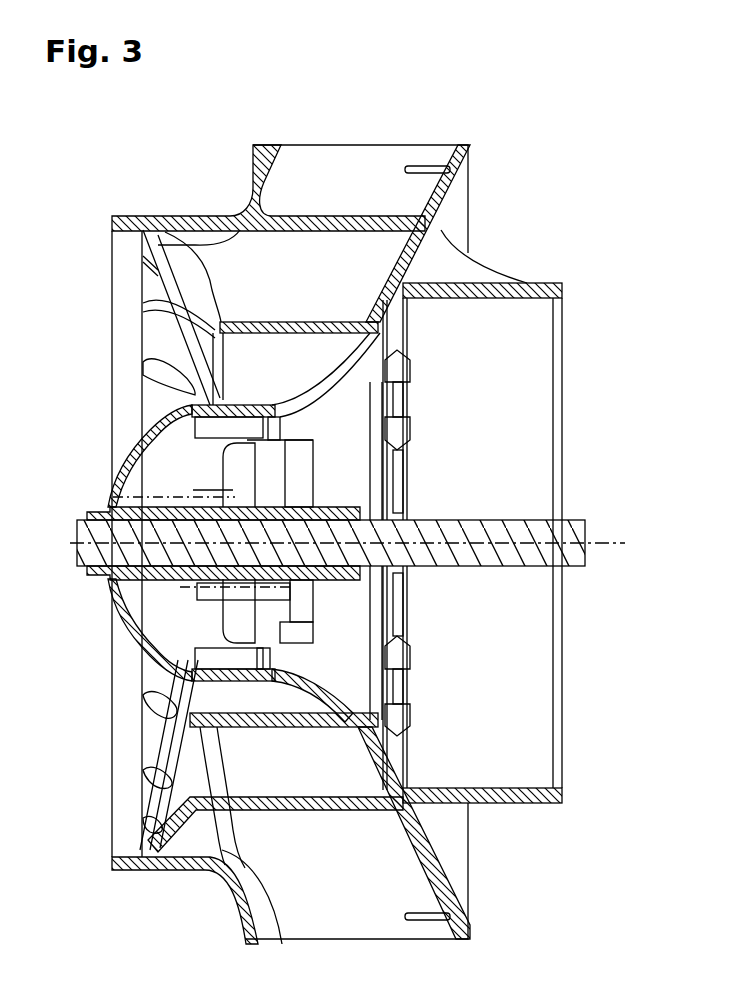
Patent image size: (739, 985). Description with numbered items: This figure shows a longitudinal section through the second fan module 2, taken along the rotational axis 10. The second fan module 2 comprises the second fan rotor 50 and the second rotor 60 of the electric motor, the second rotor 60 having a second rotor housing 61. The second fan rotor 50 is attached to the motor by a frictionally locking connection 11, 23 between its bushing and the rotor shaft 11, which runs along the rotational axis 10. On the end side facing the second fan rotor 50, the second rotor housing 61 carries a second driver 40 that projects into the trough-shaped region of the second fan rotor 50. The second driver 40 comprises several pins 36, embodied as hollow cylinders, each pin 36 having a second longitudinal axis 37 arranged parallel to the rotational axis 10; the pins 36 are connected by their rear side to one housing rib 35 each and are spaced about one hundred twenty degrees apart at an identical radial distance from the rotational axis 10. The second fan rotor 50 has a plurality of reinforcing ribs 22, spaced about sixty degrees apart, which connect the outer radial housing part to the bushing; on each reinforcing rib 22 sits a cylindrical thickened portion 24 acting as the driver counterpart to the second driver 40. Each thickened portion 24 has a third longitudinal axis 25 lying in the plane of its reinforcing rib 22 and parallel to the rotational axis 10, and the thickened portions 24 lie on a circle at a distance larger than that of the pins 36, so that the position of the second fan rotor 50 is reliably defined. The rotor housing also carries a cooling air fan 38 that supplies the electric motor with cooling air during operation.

The second fan module 2 is at (525, 123).
The rotational axis 10 is at (615, 548).
The rotor shaft 11 is at (573, 530).
The reinforcing rib 22 is at (182, 466).
The frictionally locking connection 23 is at (140, 596).
The thickened portion 24 is at (235, 492).
The third longitudinal axis 25 is at (112, 484).
The housing rib 35 is at (266, 636).
The pin 36 is at (305, 637).
The second longitudinal axis 37 is at (248, 618).
The cooling air fan 38 is at (285, 468).
The second driver 40 is at (232, 640).
The second fan rotor 50 is at (179, 184).
The second rotor 60 is at (591, 394).
The second rotor housing 61 is at (440, 860).